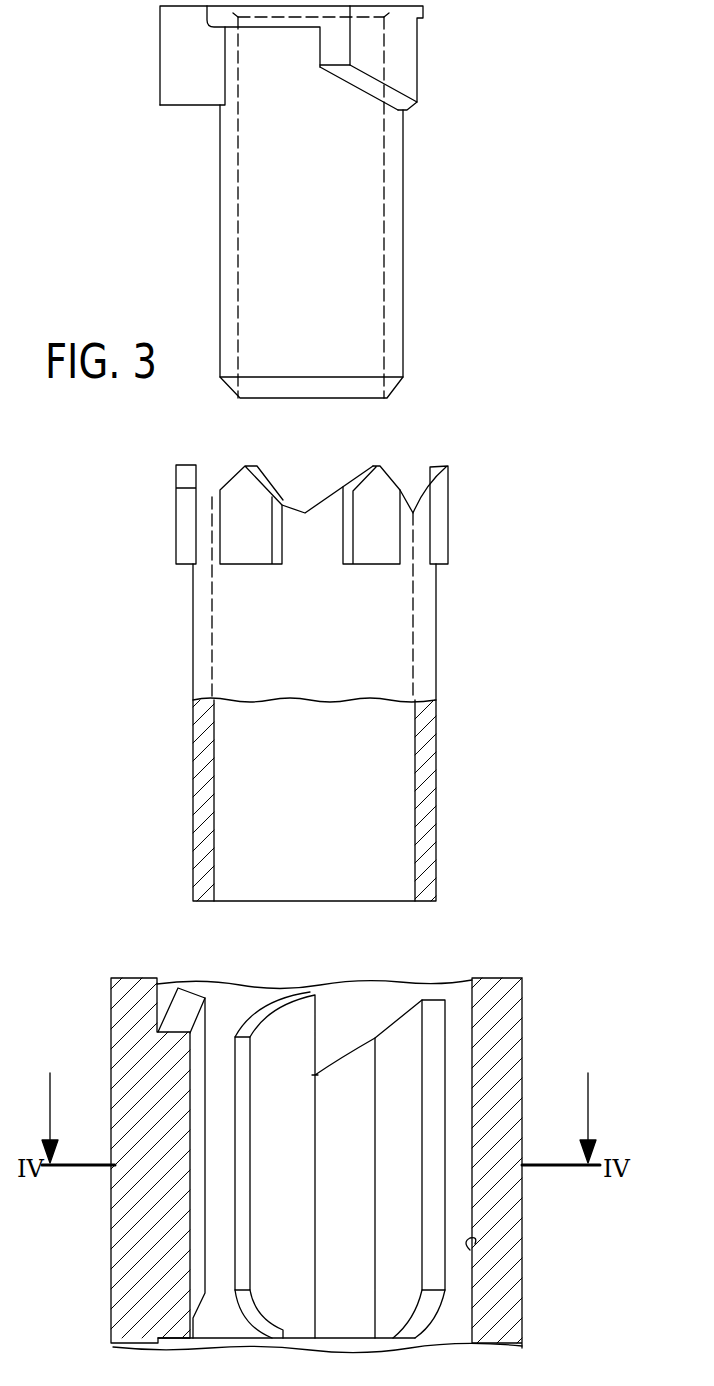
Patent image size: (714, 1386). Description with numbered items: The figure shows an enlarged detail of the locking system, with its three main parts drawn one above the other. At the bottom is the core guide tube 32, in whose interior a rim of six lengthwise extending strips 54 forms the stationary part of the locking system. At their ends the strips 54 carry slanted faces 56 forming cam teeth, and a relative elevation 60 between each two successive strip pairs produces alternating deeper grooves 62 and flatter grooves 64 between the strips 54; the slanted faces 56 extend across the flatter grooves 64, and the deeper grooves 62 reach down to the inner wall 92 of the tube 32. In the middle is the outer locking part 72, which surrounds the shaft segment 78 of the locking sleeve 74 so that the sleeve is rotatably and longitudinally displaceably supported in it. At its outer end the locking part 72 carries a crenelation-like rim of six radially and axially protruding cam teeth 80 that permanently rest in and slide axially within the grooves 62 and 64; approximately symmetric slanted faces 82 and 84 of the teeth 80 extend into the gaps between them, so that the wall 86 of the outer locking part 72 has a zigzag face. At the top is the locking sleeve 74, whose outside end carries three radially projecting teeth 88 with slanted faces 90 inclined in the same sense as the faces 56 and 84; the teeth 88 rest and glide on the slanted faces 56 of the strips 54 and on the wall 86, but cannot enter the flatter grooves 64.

The core guide tube 32 is at (530, 1020).
The strips 54 is at (300, 1220).
The slanted faces 56 is at (267, 1012).
The relative elevation 60 is at (333, 1062).
The deeper grooves 62 is at (215, 1072).
The flatter grooves 64 is at (360, 1085).
The outer locking part 72 is at (440, 652).
The locking sleeve 74 is at (412, 245).
The shaft segment 78 is at (236, 250).
The cam teeth 80 is at (228, 527).
The slanted faces 82 is at (354, 478).
The slanted faces 84 is at (388, 475).
The wall 86 is at (328, 494).
The teeth 88 is at (176, 50).
The slanted faces 90 is at (391, 97).
The inner wall 92 is at (470, 1250).